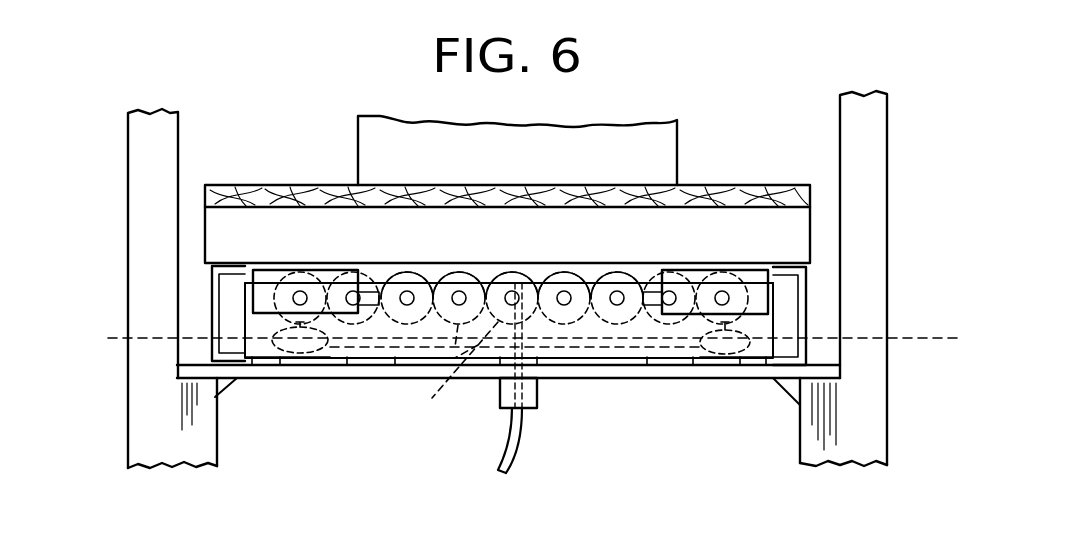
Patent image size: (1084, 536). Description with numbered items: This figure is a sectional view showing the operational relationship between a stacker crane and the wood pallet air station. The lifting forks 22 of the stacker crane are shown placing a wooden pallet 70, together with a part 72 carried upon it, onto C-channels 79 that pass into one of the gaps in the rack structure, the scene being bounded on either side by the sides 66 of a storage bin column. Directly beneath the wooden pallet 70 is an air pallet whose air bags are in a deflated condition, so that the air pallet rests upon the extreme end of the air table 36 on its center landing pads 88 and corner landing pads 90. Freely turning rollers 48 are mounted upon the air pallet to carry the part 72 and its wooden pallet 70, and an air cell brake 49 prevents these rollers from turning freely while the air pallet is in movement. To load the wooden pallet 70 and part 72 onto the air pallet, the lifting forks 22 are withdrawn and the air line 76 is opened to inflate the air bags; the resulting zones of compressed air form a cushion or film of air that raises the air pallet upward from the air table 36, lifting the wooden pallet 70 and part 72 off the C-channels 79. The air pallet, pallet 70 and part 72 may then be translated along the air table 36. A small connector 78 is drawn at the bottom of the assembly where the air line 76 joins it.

The lifting forks 22 is at (265, 278).
The air table 36 is at (305, 368).
The freely turning rollers 48 is at (465, 370).
The air cell brake 49 is at (520, 333).
The sides 66 is at (170, 160).
The wooden pallet 70 is at (757, 183).
The part 72 is at (657, 140).
The air line 76 is at (507, 447).
The connector box 78 is at (537, 408).
The C-channels 79 is at (212, 285).
The center landing pads 88 is at (365, 360).
The corner landing pads 90 is at (263, 368).